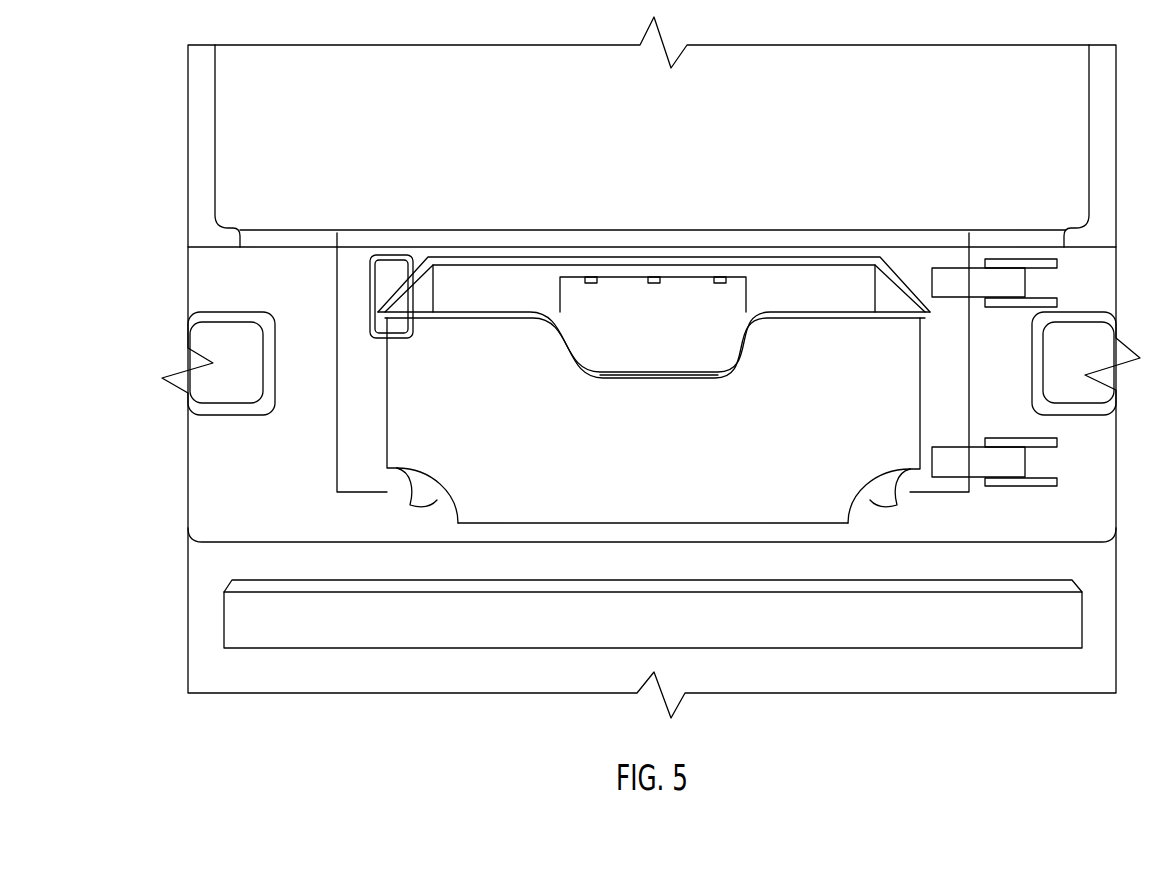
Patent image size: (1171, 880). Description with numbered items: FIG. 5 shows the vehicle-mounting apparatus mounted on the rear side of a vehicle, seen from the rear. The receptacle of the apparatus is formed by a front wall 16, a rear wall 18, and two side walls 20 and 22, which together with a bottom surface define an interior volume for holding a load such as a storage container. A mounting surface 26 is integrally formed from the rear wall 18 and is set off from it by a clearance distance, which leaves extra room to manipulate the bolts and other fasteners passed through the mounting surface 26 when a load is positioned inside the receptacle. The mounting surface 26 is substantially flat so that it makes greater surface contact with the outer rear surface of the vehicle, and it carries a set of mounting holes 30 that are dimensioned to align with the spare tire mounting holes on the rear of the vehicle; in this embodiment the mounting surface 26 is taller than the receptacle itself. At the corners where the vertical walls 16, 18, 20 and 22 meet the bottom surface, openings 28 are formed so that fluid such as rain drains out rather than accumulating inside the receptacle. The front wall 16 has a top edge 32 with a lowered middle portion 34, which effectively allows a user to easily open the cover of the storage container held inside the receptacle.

The front wall 16 is at (590, 483).
The rear wall 18 is at (795, 278).
The side wall 20 is at (390, 370).
The side wall 22 is at (917, 370).
The mounting surface 26 is at (607, 298).
The openings 28 is at (437, 500).
The mounting holes 30 is at (724, 278).
The top edge 32 is at (430, 323).
The lowered middle portion 34 is at (633, 382).